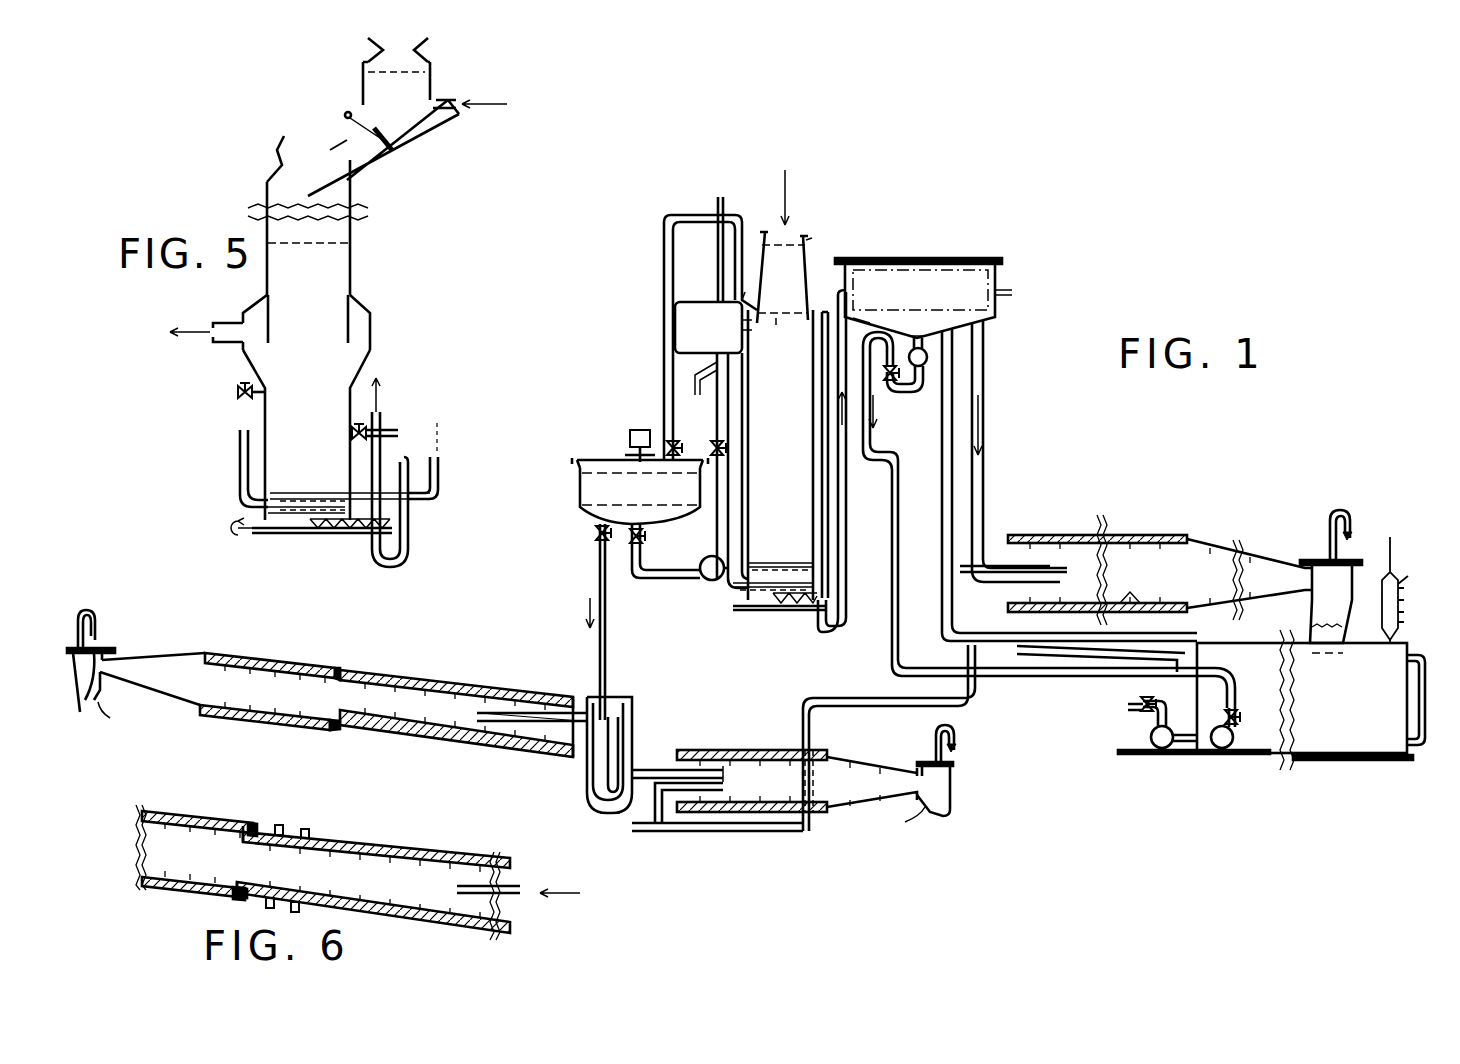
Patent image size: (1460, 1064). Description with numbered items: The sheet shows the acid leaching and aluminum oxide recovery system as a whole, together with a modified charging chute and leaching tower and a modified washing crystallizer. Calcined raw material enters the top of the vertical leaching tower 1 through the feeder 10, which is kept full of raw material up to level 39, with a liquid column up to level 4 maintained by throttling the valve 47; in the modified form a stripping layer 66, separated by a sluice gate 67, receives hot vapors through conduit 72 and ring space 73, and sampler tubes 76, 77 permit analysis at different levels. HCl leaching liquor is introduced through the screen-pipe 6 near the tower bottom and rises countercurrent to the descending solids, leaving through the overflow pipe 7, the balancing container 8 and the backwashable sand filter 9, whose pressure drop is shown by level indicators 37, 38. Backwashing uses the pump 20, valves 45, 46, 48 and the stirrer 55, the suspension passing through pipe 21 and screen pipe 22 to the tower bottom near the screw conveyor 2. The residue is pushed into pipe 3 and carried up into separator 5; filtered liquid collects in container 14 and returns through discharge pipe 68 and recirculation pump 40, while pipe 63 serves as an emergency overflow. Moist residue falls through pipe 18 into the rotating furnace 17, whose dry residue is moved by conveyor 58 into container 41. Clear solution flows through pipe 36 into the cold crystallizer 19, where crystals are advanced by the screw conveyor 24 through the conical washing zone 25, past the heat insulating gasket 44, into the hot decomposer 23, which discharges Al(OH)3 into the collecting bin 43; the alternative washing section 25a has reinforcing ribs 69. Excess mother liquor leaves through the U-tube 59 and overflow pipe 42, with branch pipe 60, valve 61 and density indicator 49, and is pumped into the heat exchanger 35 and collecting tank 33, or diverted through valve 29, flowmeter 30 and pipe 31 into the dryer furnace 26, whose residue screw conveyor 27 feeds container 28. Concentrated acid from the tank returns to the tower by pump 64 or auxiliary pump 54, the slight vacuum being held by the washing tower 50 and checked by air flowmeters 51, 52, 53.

In FIG. 5, the leaching tower 1 is at (296, 463).
In FIG. 1, the leaching tower 1 is at (771, 436).
In FIG. 5, the screw conveyor 2 is at (343, 535).
In FIG. 1, the screw conveyor 2 is at (786, 608).
In FIG. 5, the pipe 3 is at (381, 425).
In FIG. 1, the pipe 3 is at (834, 365).
In FIG. 5, the level 4 is at (347, 243).
In FIG. 1, the level 4 is at (779, 316).
In FIG. 1, the separator 5 is at (922, 278).
In FIG. 5, the screen-pipe 6 is at (439, 477).
In FIG. 1, the screen-pipe 6 is at (792, 566).
In FIG. 5, the overflow pipe 7 is at (230, 350).
In FIG. 1, the overflow pipe 7 is at (745, 292).
In FIG. 1, the balancing container 8 is at (675, 325).
In FIG. 1, the sand filter 9 is at (631, 506).
In FIG. 5, the feeder 10 is at (297, 306).
In FIG. 1, the feeder 10 is at (773, 296).
In FIG. 1, the container 14 is at (877, 328).
In FIG. 1, the rotating furnace 17 is at (1150, 536).
In FIG. 1, the pipe 18 is at (985, 402).
In FIG. 1, the crystallizer 19 is at (465, 686).
In FIG. 1, the pump 20 is at (705, 578).
In FIG. 1, the pipe 21 is at (705, 215).
In FIG. 5, the screen pipe 22 is at (238, 460).
In FIG. 1, the screen pipe 22 is at (757, 607).
In FIG. 1, the decomposer 23 is at (268, 654).
In FIG. 6, the decomposer 23 is at (140, 858).
In FIG. 1, the screw conveyor 24 is at (262, 712).
In FIG. 6, the screw conveyor 24 is at (198, 862).
In FIG. 1, the intermediate washing zone 25 is at (366, 720).
In FIG. 6, the intermediate washing section 25a is at (373, 883).
In FIG. 1, the dryer furnace 26 is at (790, 752).
In FIG. 1, the screw conveyor 27 is at (797, 781).
In FIG. 1, the container 28 is at (925, 765).
In FIG. 1, the valve 29 is at (641, 826).
In FIG. 1, the flowmeter 30 is at (641, 770).
In FIG. 1, the pipe 31 is at (722, 770).
In FIG. 1, the collecting tank 33 is at (1320, 739).
In FIG. 1, the heat exchanger 35 is at (1078, 678).
In FIG. 1, the pipe 36 is at (483, 710).
In FIG. 6, the pipe 36 is at (468, 930).
In FIG. 1, the level indicator 37 is at (717, 273).
In FIG. 1, the level indicator 38 is at (722, 337).
In FIG. 5, the level 39 is at (358, 213).
In FIG. 1, the level 39 is at (810, 241).
In FIG. 1, the recirculation pump 40 is at (915, 386).
In FIG. 1, the container 41 is at (1320, 606).
In FIG. 1, the overflow pipe 42 is at (633, 718).
In FIG. 1, the collecting bin 43 is at (104, 694).
In FIG. 1, the heat insulating gasket 44 is at (345, 668).
In FIG. 6, the heat insulating gasket 44 is at (255, 826).
In FIG. 1, the valve 45 is at (669, 446).
In FIG. 1, the valve 46 is at (714, 442).
In FIG. 1, the valve 47 is at (598, 534).
In FIG. 1, the valve 48 is at (640, 536).
In FIG. 1, the density indicator 49 is at (634, 736).
In FIG. 1, the washing tower 50 is at (1400, 604).
In FIG. 1, the air flowmeter 51 is at (79, 633).
In FIG. 1, the air flowmeter 52 is at (958, 745).
In FIG. 1, the air flowmeter 53 is at (1353, 534).
In FIG. 1, the auxiliary pump 54 is at (1163, 749).
In FIG. 1, the stirrer 55 is at (618, 446).
In FIG. 1, the conveyor 58 is at (1126, 583).
In FIG. 1, the U-tube 59 is at (595, 800).
In FIG. 1, the branch pipe 60 is at (612, 815).
In FIG. 1, the valve 61 is at (596, 774).
In FIG. 1, the pipe 63 is at (940, 444).
In FIG. 1, the pump 64 is at (1233, 748).
In FIG. 5, the stripping layer 66 is at (396, 74).
In FIG. 5, the sluice gate 67 is at (392, 143).
In FIG. 1, the discharge pipe 68 is at (921, 337).
In FIG. 6, the reinforcing ribs 69 is at (308, 829).
In FIG. 5, the conduit 72 is at (452, 101).
In FIG. 5, the ring space 73 is at (431, 112).
In FIG. 5, the sampler tube 76 is at (238, 396).
In FIG. 5, the sampler tube 77 is at (390, 432).